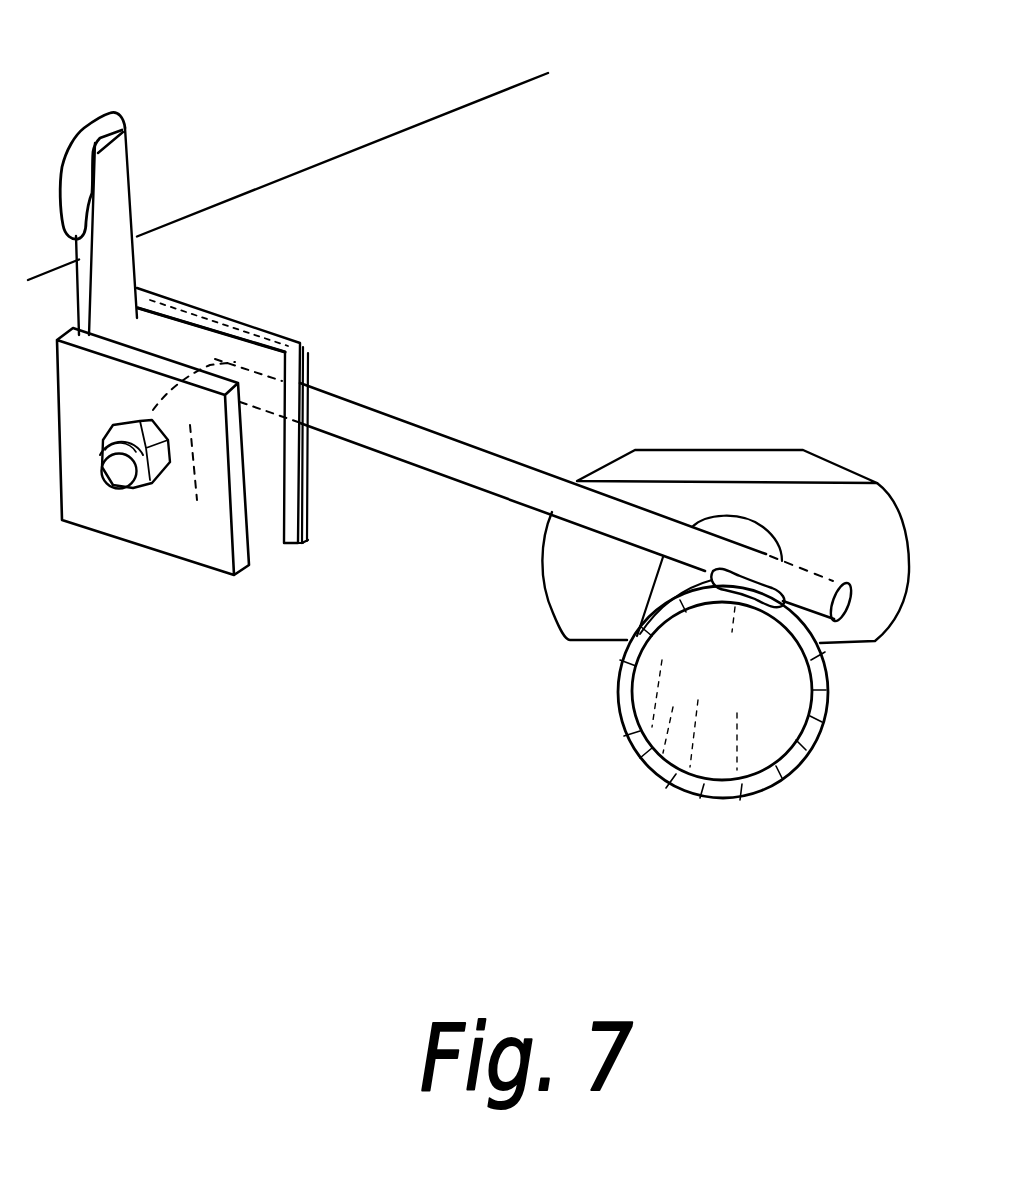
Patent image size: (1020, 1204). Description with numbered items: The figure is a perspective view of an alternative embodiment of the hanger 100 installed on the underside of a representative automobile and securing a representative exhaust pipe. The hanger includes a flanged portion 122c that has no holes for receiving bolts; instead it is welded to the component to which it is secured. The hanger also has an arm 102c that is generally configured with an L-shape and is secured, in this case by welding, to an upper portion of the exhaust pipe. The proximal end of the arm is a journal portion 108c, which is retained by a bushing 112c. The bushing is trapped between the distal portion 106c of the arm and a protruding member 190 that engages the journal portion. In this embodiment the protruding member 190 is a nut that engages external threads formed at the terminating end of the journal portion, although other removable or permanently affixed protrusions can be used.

The hanger 100 is at (592, 178).
The arm 102c is at (478, 462).
The distal portion 106c is at (408, 437).
The journal portion 108c is at (222, 415).
The bushing 112c is at (127, 523).
The flanged portion 122c is at (122, 266).
The protruding member 190 is at (118, 435).